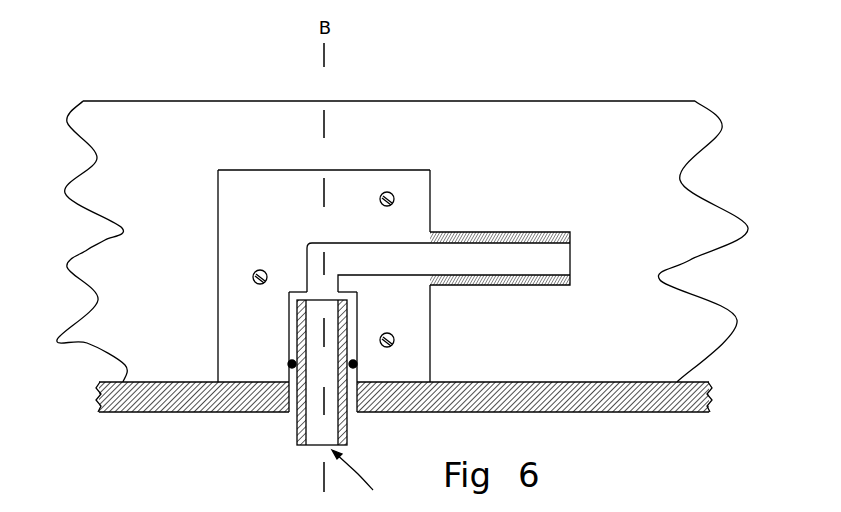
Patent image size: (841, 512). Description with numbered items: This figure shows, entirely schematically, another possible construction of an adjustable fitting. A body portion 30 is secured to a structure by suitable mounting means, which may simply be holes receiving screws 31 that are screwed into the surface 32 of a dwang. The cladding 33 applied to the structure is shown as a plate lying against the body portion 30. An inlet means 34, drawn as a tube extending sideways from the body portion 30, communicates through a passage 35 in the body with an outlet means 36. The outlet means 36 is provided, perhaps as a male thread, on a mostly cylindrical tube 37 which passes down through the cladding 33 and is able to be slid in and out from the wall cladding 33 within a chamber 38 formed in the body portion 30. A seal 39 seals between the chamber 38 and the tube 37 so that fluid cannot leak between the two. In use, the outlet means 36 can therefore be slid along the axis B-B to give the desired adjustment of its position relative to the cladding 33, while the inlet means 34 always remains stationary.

The body portion 30 is at (267, 197).
The screw 31 is at (250, 272).
The surface of a dwang 32 is at (402, 241).
The cladding 33 is at (186, 402).
The inlet means 34 is at (578, 226).
The passage 35 is at (335, 253).
The outlet means 36 is at (366, 474).
The tube 37 is at (296, 427).
The chamber 38 is at (358, 295).
The seal 39 is at (353, 364).